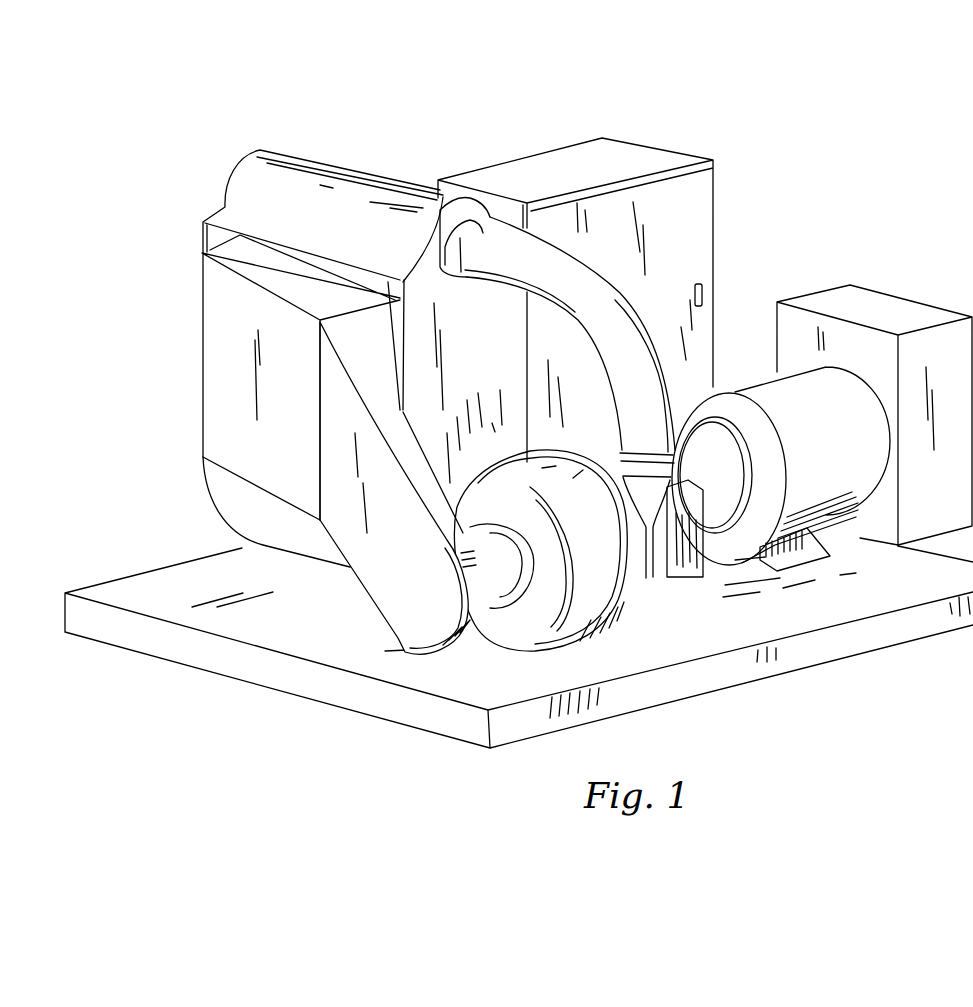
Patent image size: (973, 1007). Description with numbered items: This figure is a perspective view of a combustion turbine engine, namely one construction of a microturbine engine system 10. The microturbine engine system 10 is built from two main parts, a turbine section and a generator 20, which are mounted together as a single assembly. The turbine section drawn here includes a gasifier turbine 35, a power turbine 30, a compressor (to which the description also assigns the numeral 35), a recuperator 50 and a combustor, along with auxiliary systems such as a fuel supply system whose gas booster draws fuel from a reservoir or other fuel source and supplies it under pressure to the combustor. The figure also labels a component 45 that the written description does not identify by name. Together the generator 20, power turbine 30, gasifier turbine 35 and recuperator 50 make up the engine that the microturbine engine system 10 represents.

The microturbine engine system 10 is at (519, 403).
The generator 20 is at (837, 483).
The power turbine 30 is at (593, 152).
The gasifier turbine 35 is at (528, 620).
The outlet duct connector 45 is at (643, 560).
The recuperator 50 is at (217, 502).